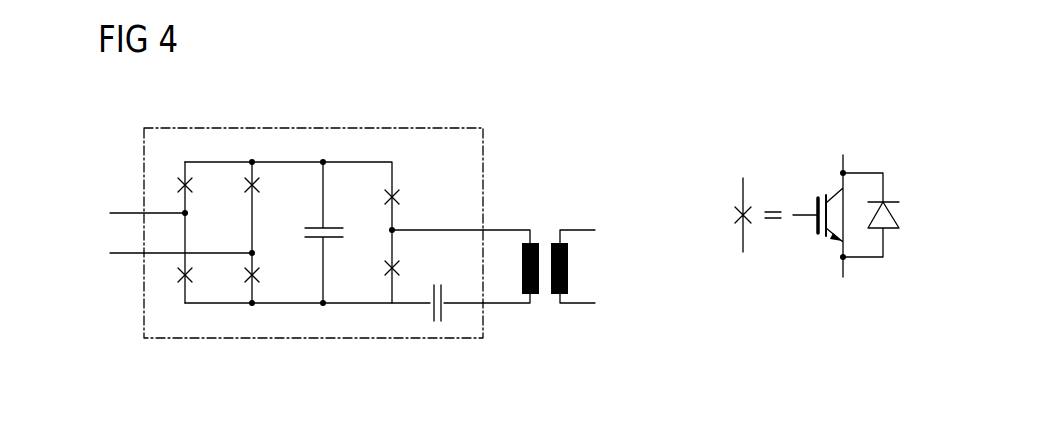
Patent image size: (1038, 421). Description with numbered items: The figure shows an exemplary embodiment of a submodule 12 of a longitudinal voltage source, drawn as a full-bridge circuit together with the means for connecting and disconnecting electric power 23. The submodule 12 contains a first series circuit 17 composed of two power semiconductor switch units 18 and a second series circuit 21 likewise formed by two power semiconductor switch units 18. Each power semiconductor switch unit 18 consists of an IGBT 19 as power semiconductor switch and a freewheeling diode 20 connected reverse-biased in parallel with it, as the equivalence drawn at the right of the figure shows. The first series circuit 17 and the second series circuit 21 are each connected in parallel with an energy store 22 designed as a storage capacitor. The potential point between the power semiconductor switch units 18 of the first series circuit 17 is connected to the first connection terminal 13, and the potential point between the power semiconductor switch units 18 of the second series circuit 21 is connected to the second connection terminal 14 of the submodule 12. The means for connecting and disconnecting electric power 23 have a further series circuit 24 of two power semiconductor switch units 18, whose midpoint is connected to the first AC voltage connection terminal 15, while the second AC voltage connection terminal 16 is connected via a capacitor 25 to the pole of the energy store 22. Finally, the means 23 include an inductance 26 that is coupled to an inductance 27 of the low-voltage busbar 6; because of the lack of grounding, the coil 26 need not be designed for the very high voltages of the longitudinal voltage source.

The low-voltage busbar 6 is at (576, 293).
The submodule 12 is at (455, 127).
The first connection terminal 13 is at (118, 213).
The second connection terminal 14 is at (120, 255).
The first AC voltage connection terminal 15 is at (510, 230).
The second AC voltage connection terminal 16 is at (502, 307).
The first series circuit 17 is at (171, 202).
The power semiconductor switch unit 18 is at (191, 182).
The IGBT 19 is at (813, 202).
The freewheeling diode 20 is at (889, 230).
The second series circuit 21 is at (270, 181).
The energy store 22 is at (340, 238).
The means for connecting and disconnecting electric power 23 is at (410, 155).
The series circuit 24 is at (380, 227).
The capacitor 25 is at (434, 318).
The inductance 26 is at (540, 250).
The inductance 27 is at (570, 265).